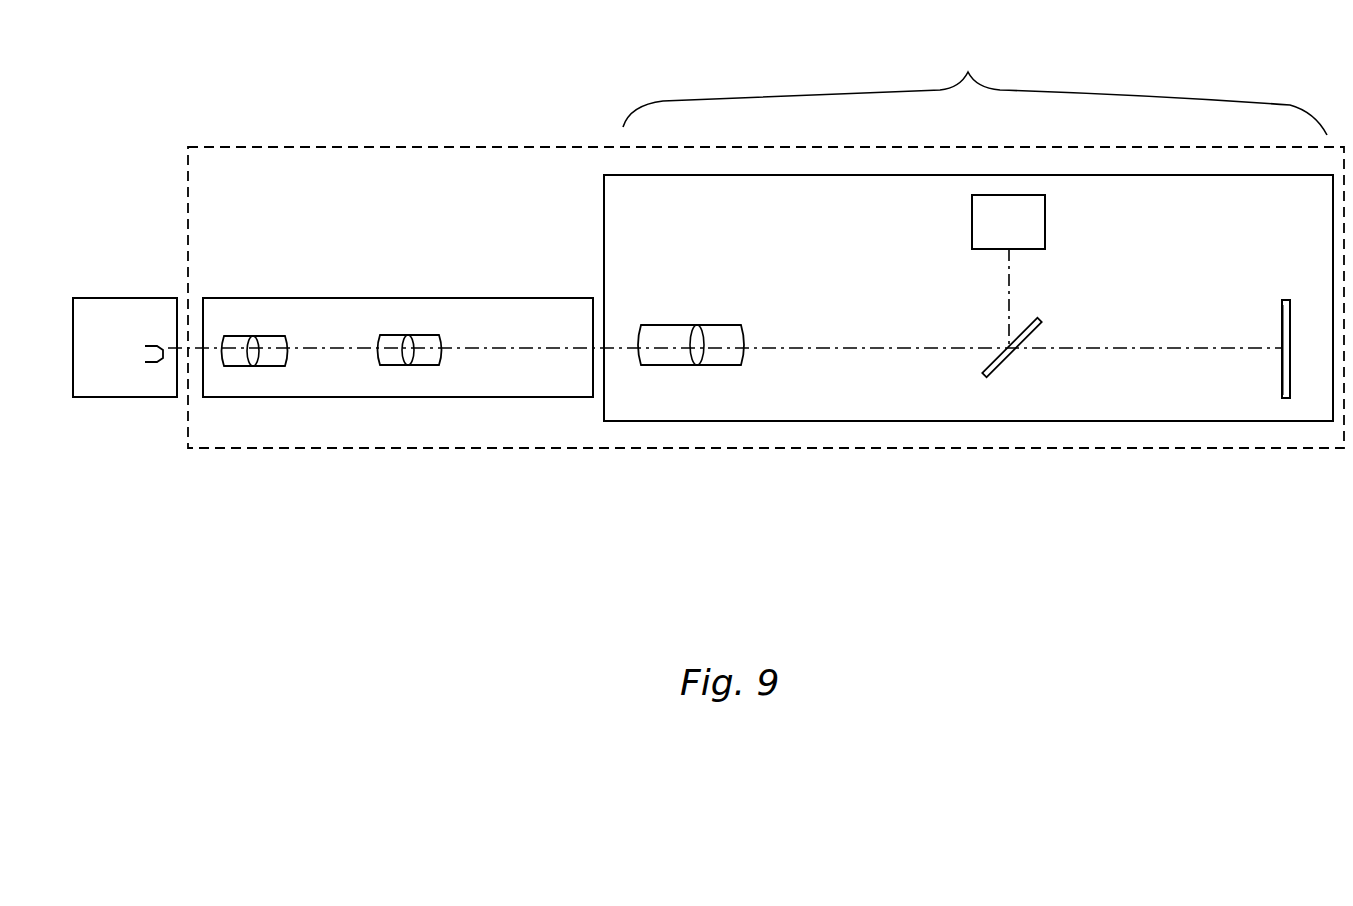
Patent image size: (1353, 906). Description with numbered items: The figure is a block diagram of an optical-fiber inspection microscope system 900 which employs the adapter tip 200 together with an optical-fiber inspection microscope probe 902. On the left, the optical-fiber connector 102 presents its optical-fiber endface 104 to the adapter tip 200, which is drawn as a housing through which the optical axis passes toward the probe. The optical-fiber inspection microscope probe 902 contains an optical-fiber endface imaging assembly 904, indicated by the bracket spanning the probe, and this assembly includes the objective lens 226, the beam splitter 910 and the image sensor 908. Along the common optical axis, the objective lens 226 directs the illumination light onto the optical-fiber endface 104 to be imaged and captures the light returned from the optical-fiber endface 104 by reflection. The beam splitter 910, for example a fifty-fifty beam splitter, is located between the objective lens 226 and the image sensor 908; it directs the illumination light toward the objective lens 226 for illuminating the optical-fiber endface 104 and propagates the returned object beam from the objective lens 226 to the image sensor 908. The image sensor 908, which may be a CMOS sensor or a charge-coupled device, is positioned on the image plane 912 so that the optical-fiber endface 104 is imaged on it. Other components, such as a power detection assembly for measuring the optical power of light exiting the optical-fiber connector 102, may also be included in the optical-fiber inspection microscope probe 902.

The optical-fiber connector 102 is at (90, 397).
The optical-fiber endface 104 is at (160, 365).
The adapter tip 200 is at (378, 397).
The objective lens 226 is at (663, 365).
The optical-fiber inspection microscope system 900 is at (327, 147).
The optical-fiber inspection microscope probe 902 is at (1080, 421).
The optical-fiber endface imaging assembly 904 is at (975, 79).
The image sensor 908 is at (1292, 385).
The beam splitter 910 is at (993, 375).
The image plane 912 is at (1280, 362).